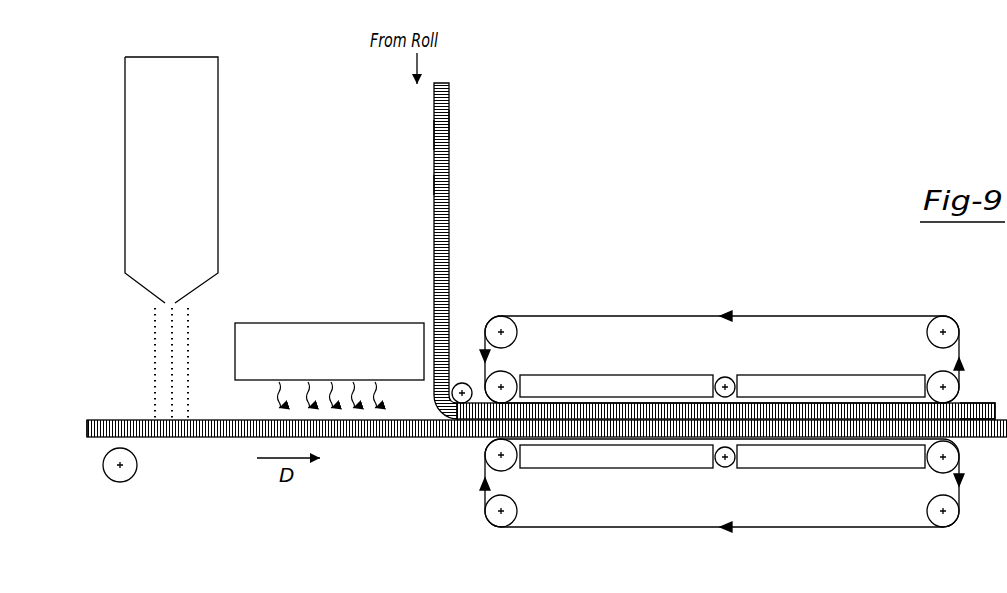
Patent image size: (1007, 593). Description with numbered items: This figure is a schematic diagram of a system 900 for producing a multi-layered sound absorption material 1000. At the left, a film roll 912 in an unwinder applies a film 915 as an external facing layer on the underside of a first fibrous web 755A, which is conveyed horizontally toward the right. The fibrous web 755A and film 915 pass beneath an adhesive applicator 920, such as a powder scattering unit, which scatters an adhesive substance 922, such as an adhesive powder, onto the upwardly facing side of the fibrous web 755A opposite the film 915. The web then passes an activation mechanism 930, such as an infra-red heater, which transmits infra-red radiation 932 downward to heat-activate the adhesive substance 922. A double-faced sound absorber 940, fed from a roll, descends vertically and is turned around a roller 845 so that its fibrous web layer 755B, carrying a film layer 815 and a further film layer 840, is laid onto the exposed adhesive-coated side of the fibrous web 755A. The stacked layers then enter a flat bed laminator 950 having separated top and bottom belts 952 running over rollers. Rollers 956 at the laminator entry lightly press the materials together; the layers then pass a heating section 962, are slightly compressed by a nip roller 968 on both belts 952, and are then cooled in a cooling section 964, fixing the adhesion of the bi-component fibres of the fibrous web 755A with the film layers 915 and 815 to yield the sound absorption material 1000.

The system 900 is at (776, 160).
The film roll 912 is at (115, 482).
The film 915 is at (135, 439).
The adhesive applicator 920 is at (180, 147).
The adhesive substance 922 is at (132, 333).
The activation mechanism 930 is at (332, 363).
The infra-red radiation 932 is at (252, 398).
The double-faced sound absorber 940 is at (460, 128).
The film layer 840 is at (452, 163).
The film layer 815 is at (437, 135).
The fibrous web 755A is at (107, 419).
The fibrous web layer 755B is at (435, 185).
The roller 845 is at (461, 383).
The flat bed laminator 950 is at (834, 306).
The top and bottom belts 952 is at (593, 316).
The rollers 956 is at (505, 372).
The heating section 962 is at (540, 538).
The cooling section 964 is at (903, 544).
The nip roller 968 is at (722, 378).
The sound absorption material 1000 is at (988, 392).